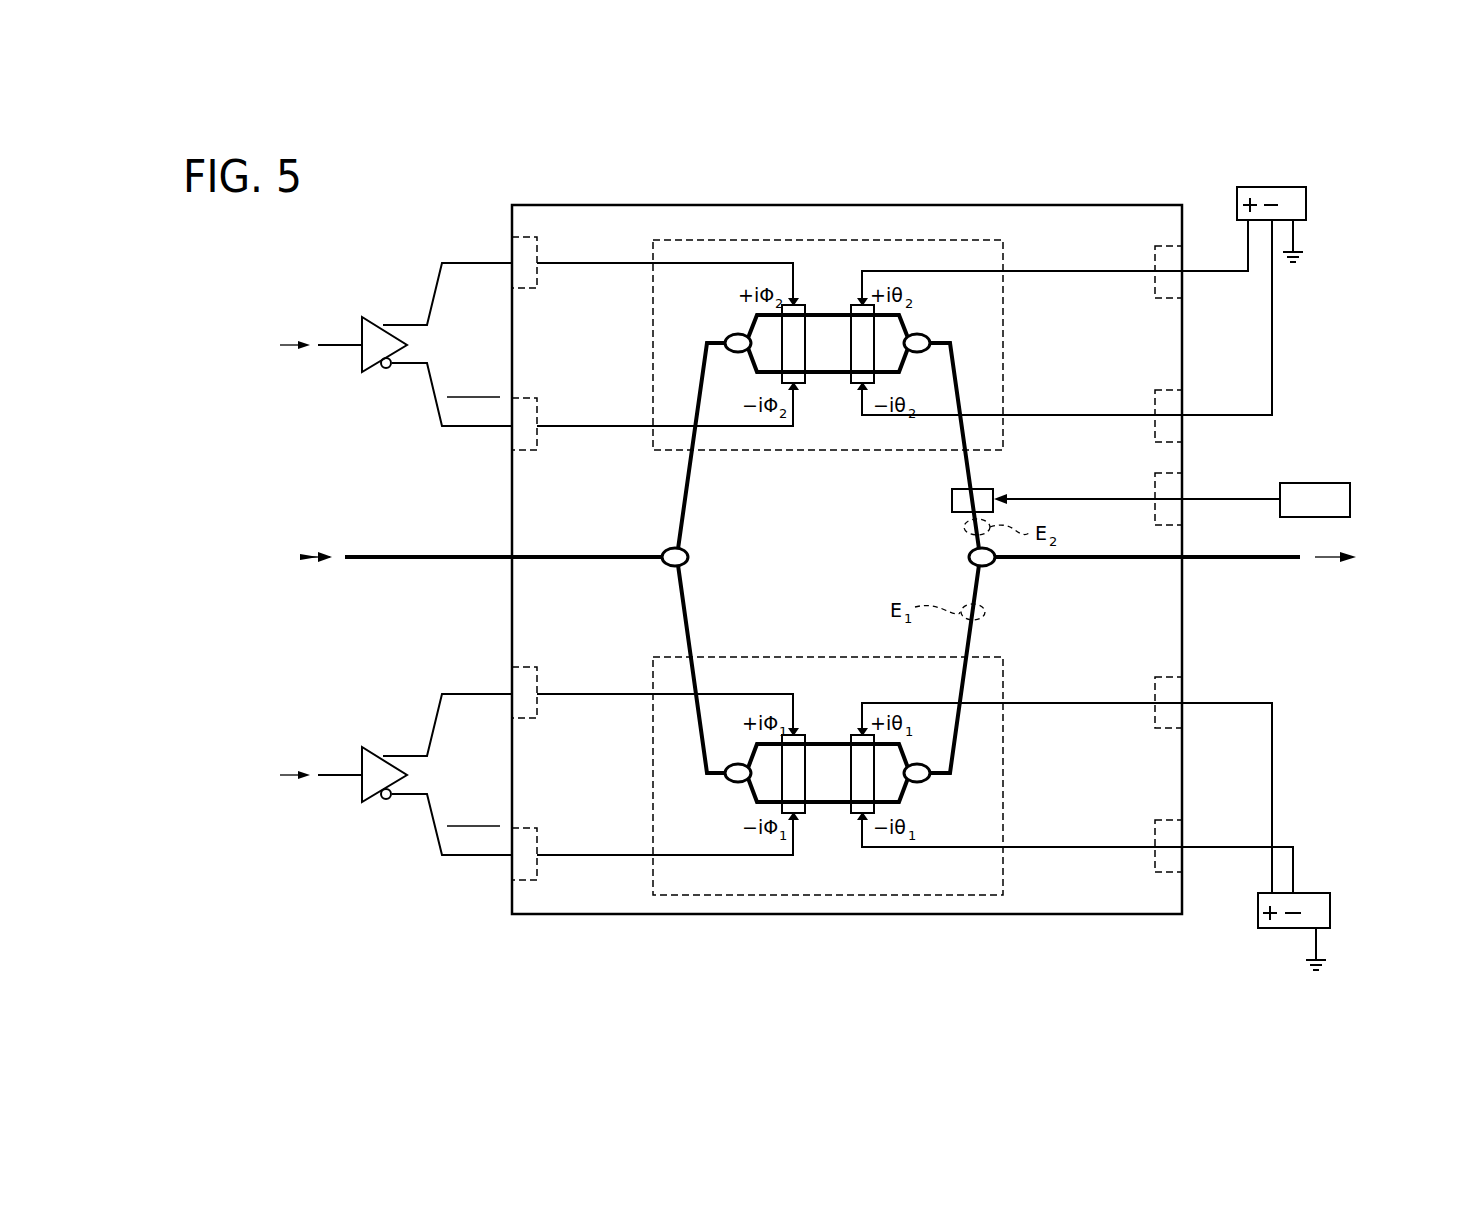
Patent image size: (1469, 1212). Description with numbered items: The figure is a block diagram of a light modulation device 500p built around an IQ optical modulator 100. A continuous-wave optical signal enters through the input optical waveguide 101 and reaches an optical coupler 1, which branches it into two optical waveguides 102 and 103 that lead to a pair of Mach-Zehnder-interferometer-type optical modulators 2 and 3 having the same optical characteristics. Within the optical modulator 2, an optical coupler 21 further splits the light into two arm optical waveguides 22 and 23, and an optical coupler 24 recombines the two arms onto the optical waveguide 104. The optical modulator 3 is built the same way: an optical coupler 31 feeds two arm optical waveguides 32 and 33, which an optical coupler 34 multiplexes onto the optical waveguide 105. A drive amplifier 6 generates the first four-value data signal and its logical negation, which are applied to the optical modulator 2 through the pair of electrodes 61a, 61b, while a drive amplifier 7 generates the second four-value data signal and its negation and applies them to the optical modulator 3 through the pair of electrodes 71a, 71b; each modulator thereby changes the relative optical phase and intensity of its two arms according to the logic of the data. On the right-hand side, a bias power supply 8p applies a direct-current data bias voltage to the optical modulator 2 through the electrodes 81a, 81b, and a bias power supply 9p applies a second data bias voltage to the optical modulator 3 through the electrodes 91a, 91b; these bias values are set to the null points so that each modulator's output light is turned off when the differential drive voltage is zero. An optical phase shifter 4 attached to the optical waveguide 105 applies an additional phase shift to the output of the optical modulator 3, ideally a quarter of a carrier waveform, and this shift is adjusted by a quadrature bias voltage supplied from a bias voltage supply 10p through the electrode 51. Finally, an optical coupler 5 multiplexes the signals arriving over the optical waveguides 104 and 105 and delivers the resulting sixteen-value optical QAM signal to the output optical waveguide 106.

The light modulation device 500p is at (587, 186).
The IQ optical modulator 100 is at (815, 205).
The optical coupler 1 is at (690, 557).
The optical modulator 2 is at (833, 657).
The optical modulator 3 is at (1003, 350).
The optical phase shifter 4 is at (953, 489).
The optical coupler 5 is at (969, 557).
The optical coupler 21 is at (726, 775).
The optical waveguide 22 is at (750, 760).
The optical waveguide 23 is at (752, 792).
The optical coupler 24 is at (925, 782).
The optical coupler 31 is at (726, 343).
The optical waveguide 32 is at (750, 330).
The optical waveguide 33 is at (752, 360).
The optical coupler 34 is at (925, 334).
The drive amplifier 6 is at (362, 793).
The drive amplifier 7 is at (362, 362).
The bias power supply 8p is at (1305, 893).
The bias power supply 9p is at (1306, 200).
The bias voltage supply 10p is at (1315, 483).
The electrode 51 is at (1182, 510).
The electrode 61a is at (540, 692).
The electrode 61b is at (540, 852).
The electrode 71a is at (540, 262).
The electrode 71b is at (540, 422).
The electrode 81a is at (1162, 677).
The electrode 81b is at (1162, 820).
The electrode 91a is at (1182, 283).
The electrode 91b is at (1182, 427).
The input optical waveguide 101 is at (408, 560).
The optical waveguide 102 is at (688, 612).
The optical waveguide 103 is at (688, 500).
The optical waveguide 104 is at (972, 633).
The optical waveguide 105 is at (965, 472).
The output optical waveguide 106 is at (1253, 563).